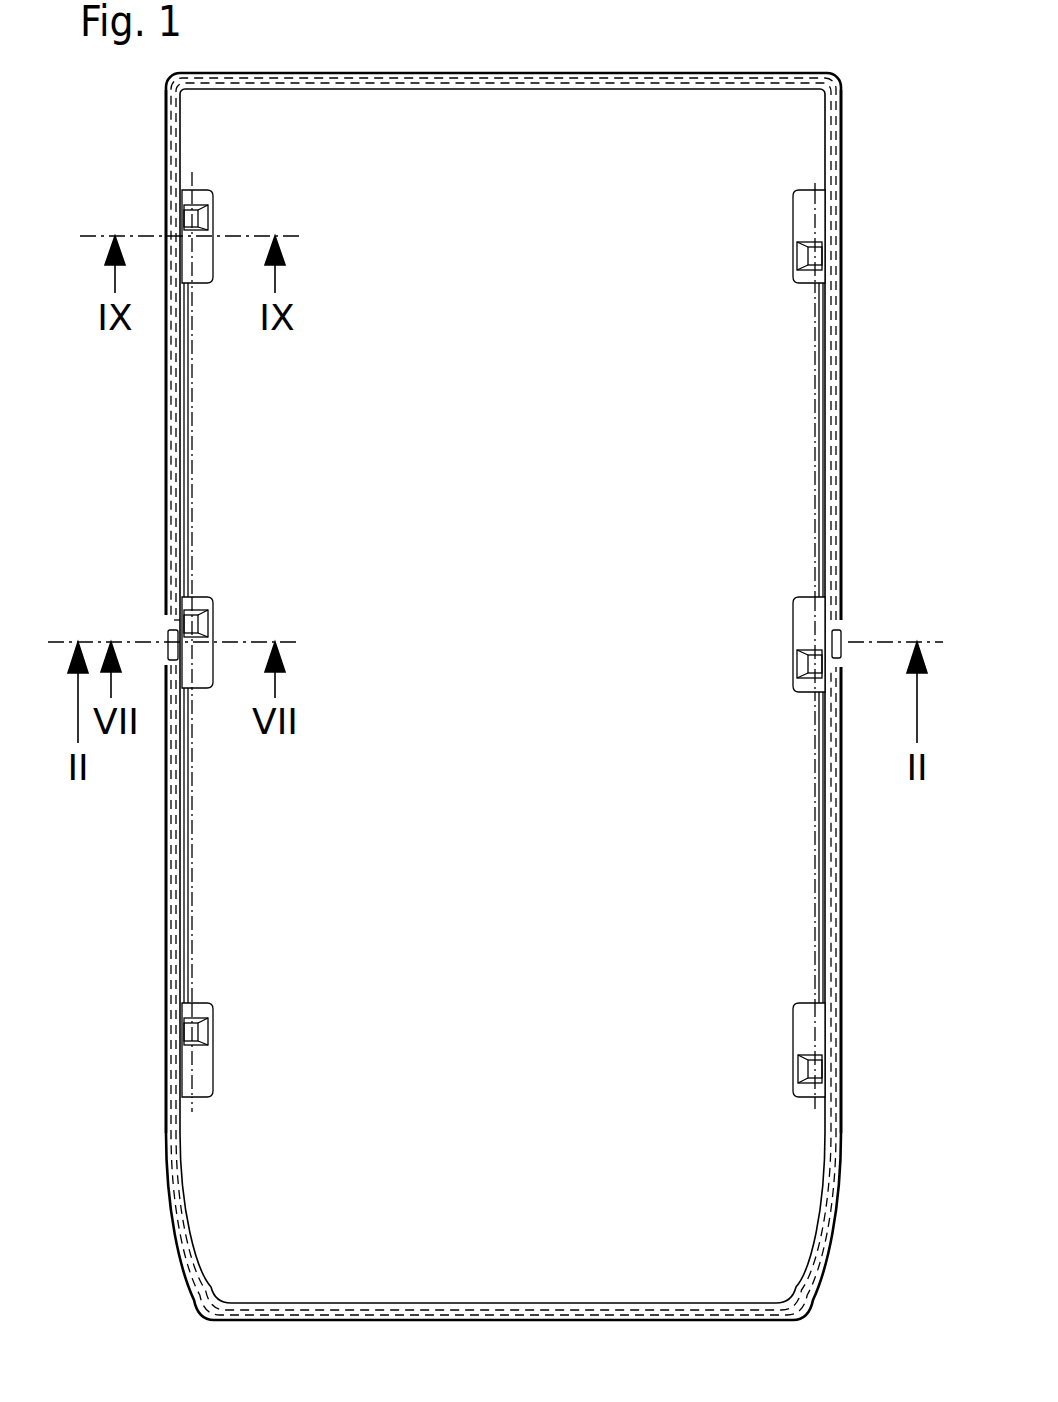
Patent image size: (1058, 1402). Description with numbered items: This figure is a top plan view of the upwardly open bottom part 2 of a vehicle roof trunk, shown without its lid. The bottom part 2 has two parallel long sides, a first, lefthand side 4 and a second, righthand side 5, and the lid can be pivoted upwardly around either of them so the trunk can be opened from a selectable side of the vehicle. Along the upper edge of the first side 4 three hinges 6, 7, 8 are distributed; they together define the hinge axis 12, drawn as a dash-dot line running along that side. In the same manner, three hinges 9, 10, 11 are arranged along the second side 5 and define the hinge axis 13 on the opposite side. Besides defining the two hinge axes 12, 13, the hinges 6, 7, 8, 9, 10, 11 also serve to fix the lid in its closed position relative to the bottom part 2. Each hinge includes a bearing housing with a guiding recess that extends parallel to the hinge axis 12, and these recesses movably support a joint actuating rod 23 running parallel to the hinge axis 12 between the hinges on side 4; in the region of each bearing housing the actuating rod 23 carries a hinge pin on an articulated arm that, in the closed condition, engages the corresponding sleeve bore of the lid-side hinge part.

The bottom part 2 is at (507, 970).
The first side 4 is at (152, 485).
The second side 5 is at (856, 512).
The hinge 6 is at (225, 994).
The hinge 7 is at (220, 583).
The hinge 8 is at (220, 298).
The hinge 9 is at (776, 1020).
The hinge 10 is at (777, 595).
The hinge 11 is at (778, 298).
The hinge axis 12 is at (192, 442).
The hinge axis 13 is at (812, 393).
The actuating rod 23 is at (185, 520).